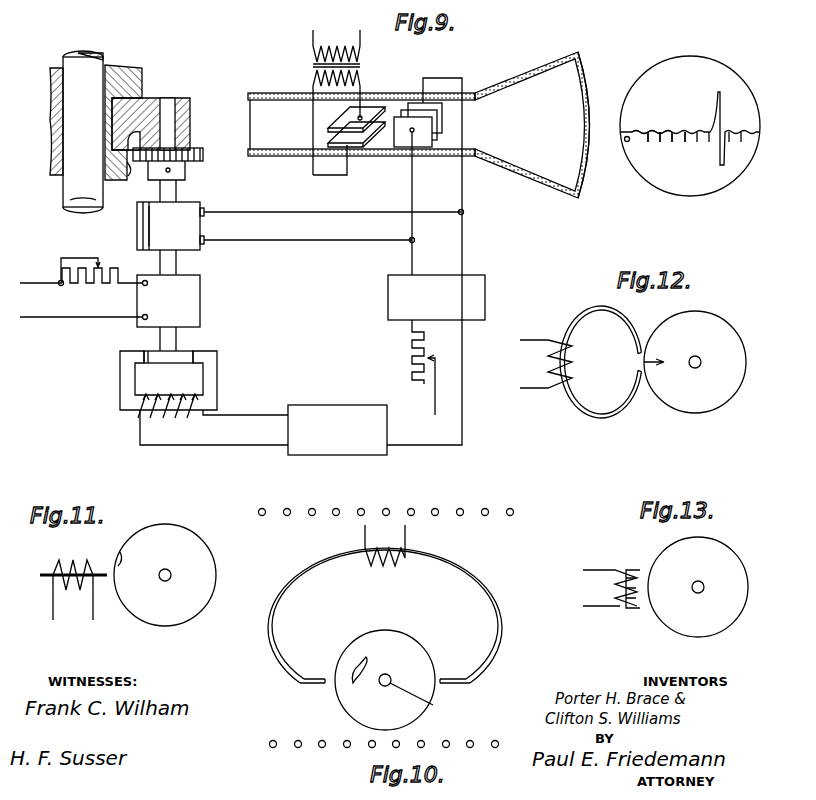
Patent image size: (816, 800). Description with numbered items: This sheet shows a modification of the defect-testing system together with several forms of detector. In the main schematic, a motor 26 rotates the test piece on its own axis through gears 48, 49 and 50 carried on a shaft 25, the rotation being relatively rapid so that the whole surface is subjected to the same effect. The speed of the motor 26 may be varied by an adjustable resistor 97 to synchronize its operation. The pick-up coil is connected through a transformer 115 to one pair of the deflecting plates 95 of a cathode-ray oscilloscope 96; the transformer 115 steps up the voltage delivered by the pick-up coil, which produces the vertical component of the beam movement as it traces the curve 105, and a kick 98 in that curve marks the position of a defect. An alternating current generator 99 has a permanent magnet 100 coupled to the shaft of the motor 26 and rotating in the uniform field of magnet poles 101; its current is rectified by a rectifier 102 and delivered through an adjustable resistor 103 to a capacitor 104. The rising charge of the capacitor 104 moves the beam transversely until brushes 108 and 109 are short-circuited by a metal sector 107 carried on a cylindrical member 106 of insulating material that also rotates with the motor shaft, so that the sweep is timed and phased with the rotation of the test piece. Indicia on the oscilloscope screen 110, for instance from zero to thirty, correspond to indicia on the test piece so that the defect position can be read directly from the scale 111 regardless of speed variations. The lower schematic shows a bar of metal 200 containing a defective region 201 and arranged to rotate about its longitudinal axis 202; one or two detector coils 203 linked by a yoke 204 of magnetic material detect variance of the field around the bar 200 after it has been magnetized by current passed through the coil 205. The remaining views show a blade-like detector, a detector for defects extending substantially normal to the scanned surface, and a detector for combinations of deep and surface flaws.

In FIG. 9, the shaft 25 is at (62, 192).
In FIG. 9, the gear 50 is at (136, 82).
In FIG. 9, the gear 48 is at (203, 155).
In FIG. 9, the gear 49 is at (130, 175).
In FIG. 9, the cylindrical member 106 is at (190, 202).
In FIG. 9, the metal sector 107 is at (147, 234).
In FIG. 9, the brush 108 is at (206, 206).
In FIG. 9, the brush 109 is at (206, 248).
In FIG. 9, the motor 26 is at (202, 295).
In FIG. 9, the adjustable resistor 97 is at (114, 284).
In FIG. 9, the permanent magnet 100 is at (190, 351).
In FIG. 9, the magnet poles 101 is at (120, 382).
In FIG. 9, the alternating current generator 99 is at (213, 406).
In FIG. 9, the transformer 115 is at (312, 62).
In FIG. 9, the deflecting plates 95 is at (375, 140).
In FIG. 9, the cathode-ray oscilloscope 96 is at (503, 86).
In FIG. 9, the oscilloscope screen 110 is at (590, 96).
In FIG. 9, the kick 98 is at (724, 108).
In FIG. 9, the curve 105 is at (654, 130).
In FIG. 9, the scale 111 is at (678, 145).
In FIG. 9, the capacitor 104 is at (386, 303).
In FIG. 9, the adjustable resistor 103 is at (410, 358).
In FIG. 9, the rectifier 102 is at (343, 386).
In FIG. 10, the coil 205 is at (273, 740).
In FIG. 10, the yoke 204 is at (305, 568).
In FIG. 10, the detector coil 203 is at (406, 533).
In FIG. 10, the bar of metal 200 is at (410, 632).
In FIG. 10, the longitudinal axis 202 is at (428, 704).
In FIG. 10, the defective region 201 is at (355, 690).